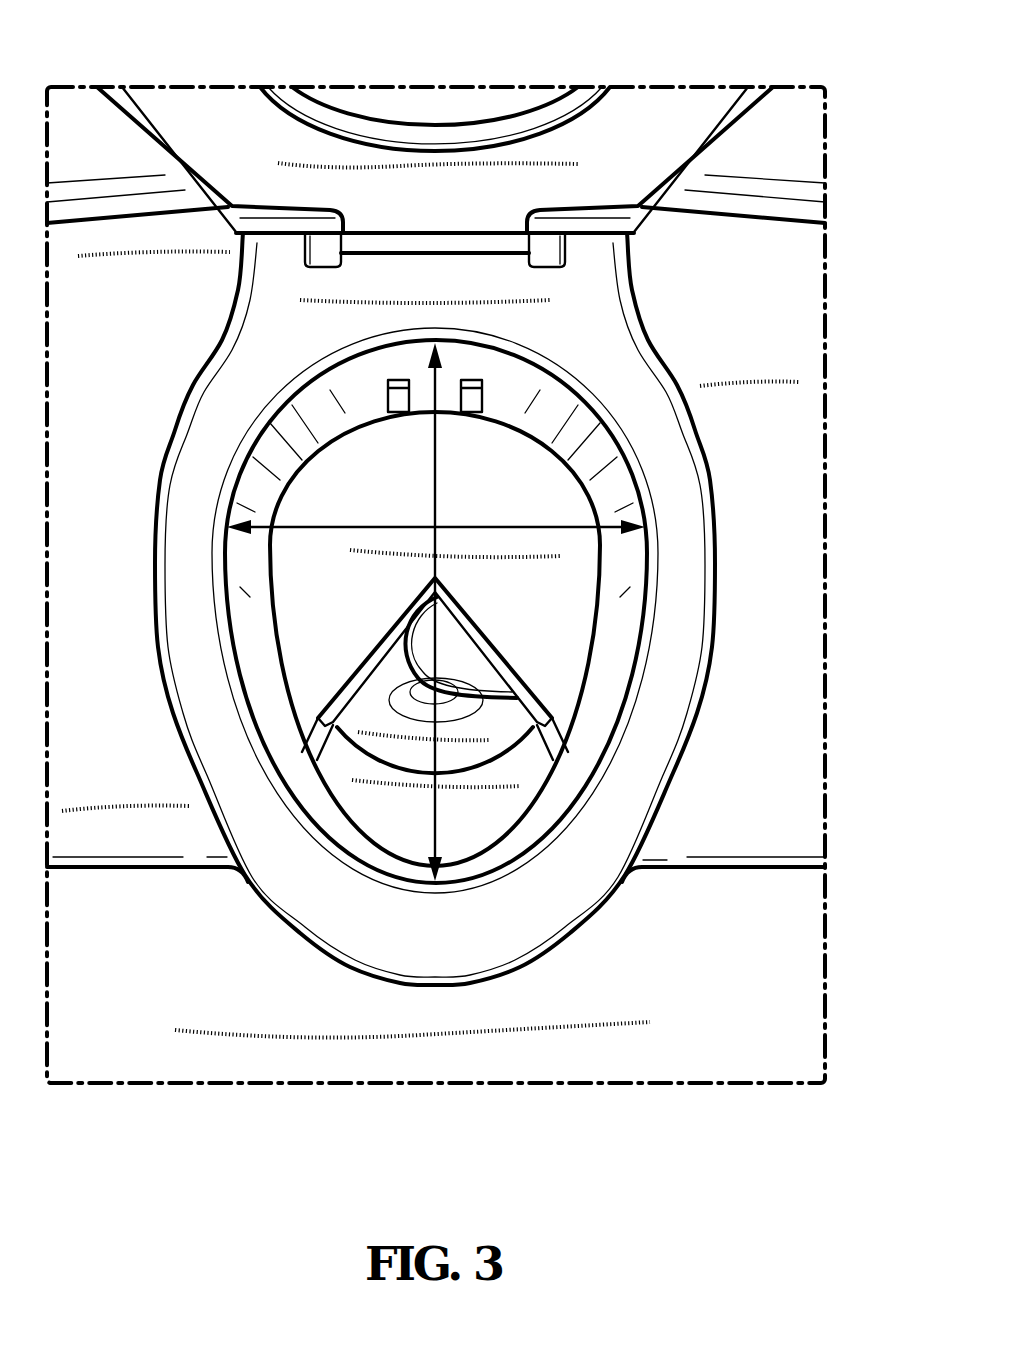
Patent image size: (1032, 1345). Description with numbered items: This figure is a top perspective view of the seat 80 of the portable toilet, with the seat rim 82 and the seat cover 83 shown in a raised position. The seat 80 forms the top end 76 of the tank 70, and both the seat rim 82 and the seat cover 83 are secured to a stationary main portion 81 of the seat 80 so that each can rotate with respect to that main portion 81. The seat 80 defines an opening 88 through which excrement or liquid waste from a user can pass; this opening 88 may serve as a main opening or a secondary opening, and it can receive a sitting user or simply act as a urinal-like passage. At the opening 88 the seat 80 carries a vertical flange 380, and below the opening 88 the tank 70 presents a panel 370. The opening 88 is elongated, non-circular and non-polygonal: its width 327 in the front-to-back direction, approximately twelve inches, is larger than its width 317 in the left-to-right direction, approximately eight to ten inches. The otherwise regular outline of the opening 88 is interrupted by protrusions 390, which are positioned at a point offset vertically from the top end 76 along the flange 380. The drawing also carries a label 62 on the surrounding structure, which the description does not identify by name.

The floor 62 is at (687, 1023).
The tank 70 is at (765, 787).
The top end 76 is at (177, 500).
The seat 80 is at (436, 886).
The main portion 81 is at (168, 840).
The seat rim 82 is at (212, 128).
The seat cover 83 is at (383, 97).
The opening 88 is at (608, 437).
The width 317 is at (310, 525).
The width 327 is at (433, 743).
The panel 370 is at (527, 593).
The flange 380 is at (262, 662).
The protrusions 390 is at (397, 413).